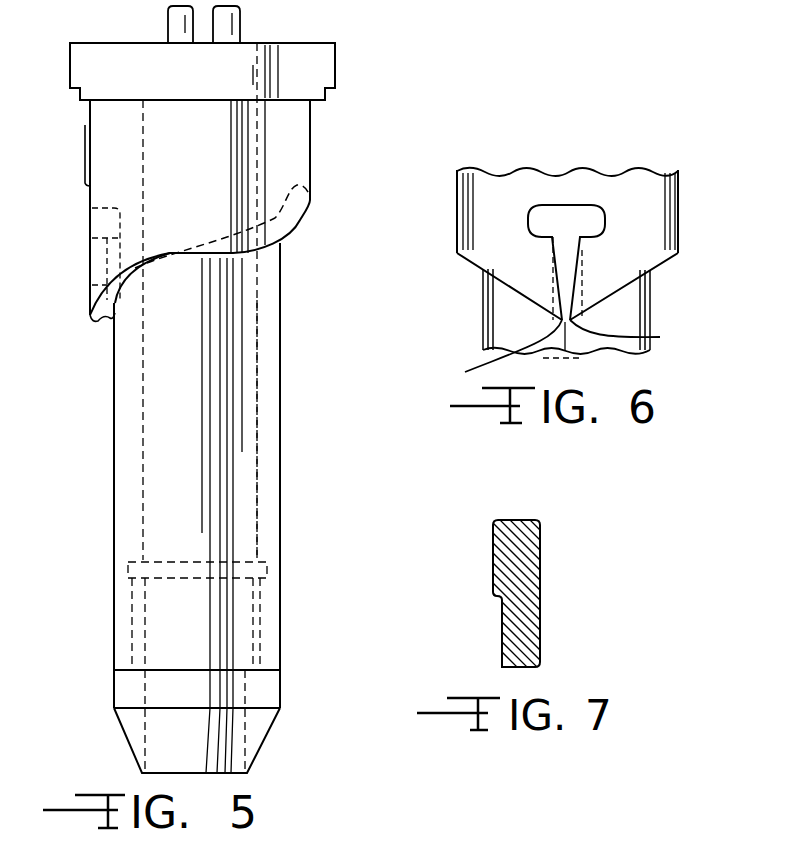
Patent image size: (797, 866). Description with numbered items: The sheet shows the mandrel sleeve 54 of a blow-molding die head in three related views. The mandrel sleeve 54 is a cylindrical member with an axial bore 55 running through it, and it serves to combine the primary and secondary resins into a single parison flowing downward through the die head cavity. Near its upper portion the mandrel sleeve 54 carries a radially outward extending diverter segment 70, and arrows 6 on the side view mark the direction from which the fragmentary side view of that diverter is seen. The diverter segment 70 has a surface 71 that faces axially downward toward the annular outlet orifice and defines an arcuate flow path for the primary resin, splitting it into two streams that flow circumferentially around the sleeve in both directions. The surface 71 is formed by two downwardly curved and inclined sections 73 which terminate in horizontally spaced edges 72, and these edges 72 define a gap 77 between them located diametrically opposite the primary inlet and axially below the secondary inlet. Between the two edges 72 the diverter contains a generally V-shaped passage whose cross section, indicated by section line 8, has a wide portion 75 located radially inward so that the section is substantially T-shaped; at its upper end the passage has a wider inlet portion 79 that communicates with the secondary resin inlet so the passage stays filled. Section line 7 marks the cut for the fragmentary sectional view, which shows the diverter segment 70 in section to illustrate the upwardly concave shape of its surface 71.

In FIG. 5, the mandrel sleeve 54 is at (283, 413).
In FIG. 7, the mandrel sleeve 54 is at (540, 568).
In FIG. 5, the axial bore 55 is at (258, 332).
In FIG. 5, the diverter segment 70 is at (85, 125).
In FIG. 6, the diverter segment 70 is at (652, 190).
In FIG. 7, the diverter segment 70 is at (493, 597).
In FIG. 5, the surface 71 is at (88, 326).
In FIG. 6, the surface 71 is at (485, 280).
In FIG. 7, the surface 71 is at (500, 604).
In FIG. 6, the edges 72 is at (564, 355).
In FIG. 6, the curved and inclined sections 73 is at (535, 283).
In FIG. 6, the wide portion 75 is at (583, 260).
In FIG. 6, the gap 77 is at (565, 350).
In FIG. 6, the wider inlet portion 79 is at (565, 205).
In FIG. 5, the arrows 6— 6 is at (35, 162).
In FIG. 6, the line 7— 7 is at (636, 290).
In FIG. 6, the line 8— 8 is at (600, 298).